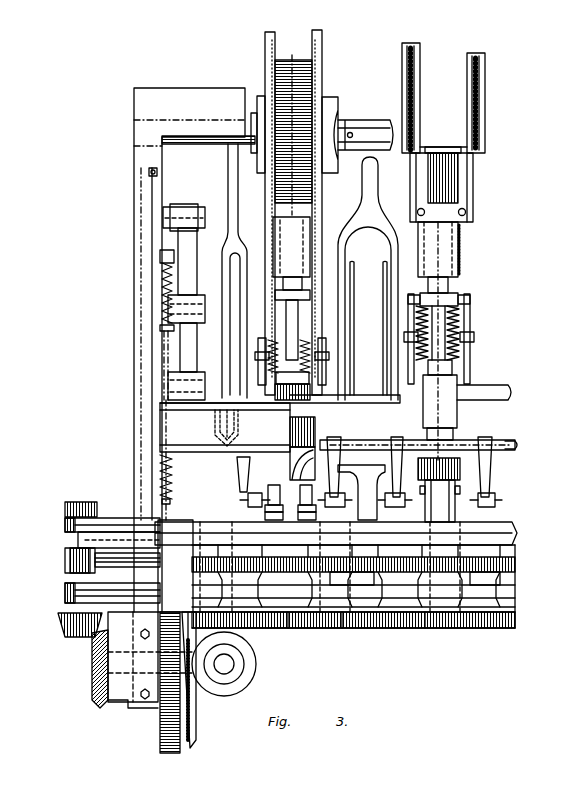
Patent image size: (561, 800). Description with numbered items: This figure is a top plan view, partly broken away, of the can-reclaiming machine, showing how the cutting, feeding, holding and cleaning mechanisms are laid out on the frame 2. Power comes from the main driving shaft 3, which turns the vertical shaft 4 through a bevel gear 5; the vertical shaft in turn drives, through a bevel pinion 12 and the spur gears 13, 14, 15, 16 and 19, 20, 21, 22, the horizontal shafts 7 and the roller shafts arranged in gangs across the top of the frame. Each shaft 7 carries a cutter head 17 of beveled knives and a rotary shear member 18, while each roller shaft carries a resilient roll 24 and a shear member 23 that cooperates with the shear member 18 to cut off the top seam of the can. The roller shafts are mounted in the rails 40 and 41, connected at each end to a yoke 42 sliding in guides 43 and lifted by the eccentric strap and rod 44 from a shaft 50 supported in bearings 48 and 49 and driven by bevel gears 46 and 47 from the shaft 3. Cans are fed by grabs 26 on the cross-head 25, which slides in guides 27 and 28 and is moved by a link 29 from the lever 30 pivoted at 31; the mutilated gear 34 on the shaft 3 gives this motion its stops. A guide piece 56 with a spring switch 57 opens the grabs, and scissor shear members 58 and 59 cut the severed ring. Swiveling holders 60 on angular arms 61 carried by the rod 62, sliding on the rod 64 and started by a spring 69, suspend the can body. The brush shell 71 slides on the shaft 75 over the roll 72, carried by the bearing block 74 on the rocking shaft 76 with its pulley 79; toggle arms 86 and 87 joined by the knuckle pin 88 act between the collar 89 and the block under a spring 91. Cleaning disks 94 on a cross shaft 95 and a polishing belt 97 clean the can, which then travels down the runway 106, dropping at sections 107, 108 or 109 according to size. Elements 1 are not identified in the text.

The base 1 is at (145, 669).
The frame 2 is at (163, 158).
The main driving shaft 3 is at (88, 645).
The vertical shaft 4 is at (224, 664).
The bevel gear 5 is at (194, 742).
The shaft 7 is at (172, 495).
The bevel pinion 12 is at (232, 630).
The spur gear 13 is at (258, 628).
The spur gear 14 is at (290, 630).
The spur gear 15 is at (342, 632).
The spur gear 16 is at (425, 632).
The cutter head 17 is at (318, 440).
The rotary shear member 18 is at (299, 490).
The spur gear 19 is at (276, 553).
The spur gear 20 is at (322, 553).
The spur gear 21 is at (400, 553).
The spur gear 22 is at (474, 553).
The shear member 23 is at (455, 485).
The resilient head or roll 24 is at (460, 470).
The cross-head 25 is at (165, 428).
The grab 26 is at (322, 403).
The guide 27 is at (152, 372).
The guide 28 is at (148, 353).
The link 29 is at (206, 346).
The lever 30 is at (197, 258).
The pivot 31 is at (170, 207).
The mutilated gear 34 is at (176, 693).
The rail 40 is at (515, 600).
The rail 41 is at (517, 533).
The yoke 42 is at (124, 565).
The guide 43 is at (133, 522).
The eccentric strap and rod 44 is at (65, 556).
The bevel gear 46 is at (125, 708).
The bevel gear 47 is at (72, 635).
The bearing 48 is at (65, 592).
The bearing 49 is at (65, 528).
The shaft 50 is at (83, 502).
The guide piece 56 is at (247, 220).
The spring switch 57 is at (250, 432).
The scissors shear member 58 is at (289, 502).
The scissors shear member 59 is at (293, 515).
The swiveling clamp or holder 60 is at (480, 505).
The angular arm 61 is at (230, 475).
The rod 62 is at (514, 428).
The rod 64 is at (172, 425).
The spring 69 is at (172, 290).
The brush shell 71 is at (455, 252).
The roll 72 is at (455, 180).
The bearing block 74 is at (457, 415).
The shaft 75 is at (430, 290).
The shaft 76 is at (508, 382).
The pulley 79 is at (476, 428).
The toggle arm 86 is at (312, 355).
The toggle arm 87 is at (257, 354).
The knuckle pin 88 is at (474, 337).
The collar 89 is at (457, 293).
The spring 91 is at (448, 322).
The cleaning disk 94 is at (266, 34).
The cross shaft 95 is at (360, 115).
The cleaning or polishing belt 97 is at (282, 58).
The runway 106 is at (485, 144).
The runway section 107 is at (485, 112).
The runway section 108 is at (485, 86).
The runway section 109 is at (485, 62).